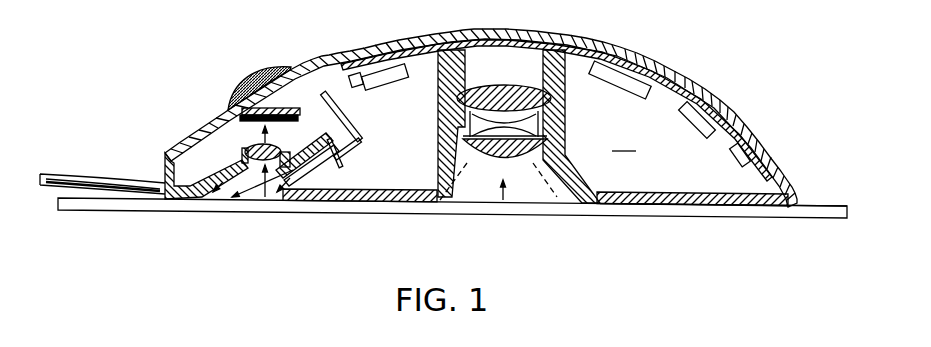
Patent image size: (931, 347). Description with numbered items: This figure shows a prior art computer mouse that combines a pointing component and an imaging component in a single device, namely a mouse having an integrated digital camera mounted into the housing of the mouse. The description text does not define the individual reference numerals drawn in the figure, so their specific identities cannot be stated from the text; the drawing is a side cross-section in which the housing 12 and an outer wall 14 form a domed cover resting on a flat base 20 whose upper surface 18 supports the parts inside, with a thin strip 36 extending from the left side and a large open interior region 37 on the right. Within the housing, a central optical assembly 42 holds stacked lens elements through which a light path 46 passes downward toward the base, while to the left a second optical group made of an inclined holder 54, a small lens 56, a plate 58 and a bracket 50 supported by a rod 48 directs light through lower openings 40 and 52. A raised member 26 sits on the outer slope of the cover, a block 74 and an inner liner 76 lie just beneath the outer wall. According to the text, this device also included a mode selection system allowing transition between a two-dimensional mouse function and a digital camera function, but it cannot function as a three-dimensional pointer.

The housing 12 is at (778, 118).
The outer shell wall 14 is at (713, 70).
The top surface of base plate 18 is at (838, 185).
The base plate 20 is at (757, 220).
The actuator button 26 is at (265, 72).
The flexible strip 36 is at (102, 180).
The interior chamber 37 is at (624, 140).
The bottom opening 40 is at (207, 200).
The lens assembly 42 is at (436, 91).
The light beam path 46 is at (503, 200).
The support rod 48 is at (338, 128).
The aperture member 50 is at (348, 156).
The second opening 52 is at (278, 198).
The lens holder 54 is at (245, 151).
The lens 56 is at (270, 137).
The filter 58 is at (248, 122).
The sensor block 74 is at (378, 88).
The inner liner 76 is at (338, 72).